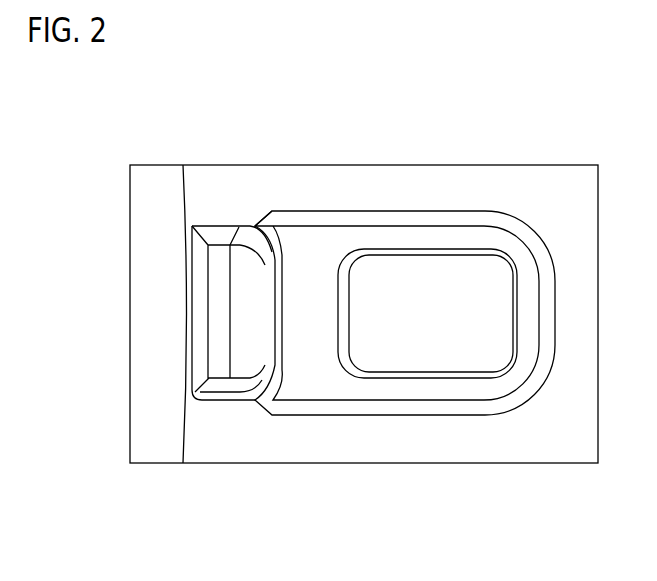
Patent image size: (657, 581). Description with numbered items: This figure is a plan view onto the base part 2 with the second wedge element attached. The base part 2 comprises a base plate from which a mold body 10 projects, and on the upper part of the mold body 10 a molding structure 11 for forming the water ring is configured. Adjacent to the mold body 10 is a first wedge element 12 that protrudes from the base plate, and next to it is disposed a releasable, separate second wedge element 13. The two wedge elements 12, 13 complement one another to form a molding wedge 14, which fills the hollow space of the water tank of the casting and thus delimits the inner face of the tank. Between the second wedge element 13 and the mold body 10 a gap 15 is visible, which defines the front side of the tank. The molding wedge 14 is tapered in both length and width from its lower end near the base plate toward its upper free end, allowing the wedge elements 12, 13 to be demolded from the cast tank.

The base part 2 is at (522, 155).
The mold body 10 is at (315, 383).
The molding structure 11 is at (420, 405).
The first wedge element 12 is at (218, 362).
The second wedge element 13 is at (245, 357).
The molding wedge 14 is at (179, 374).
The gap 15 is at (250, 217).